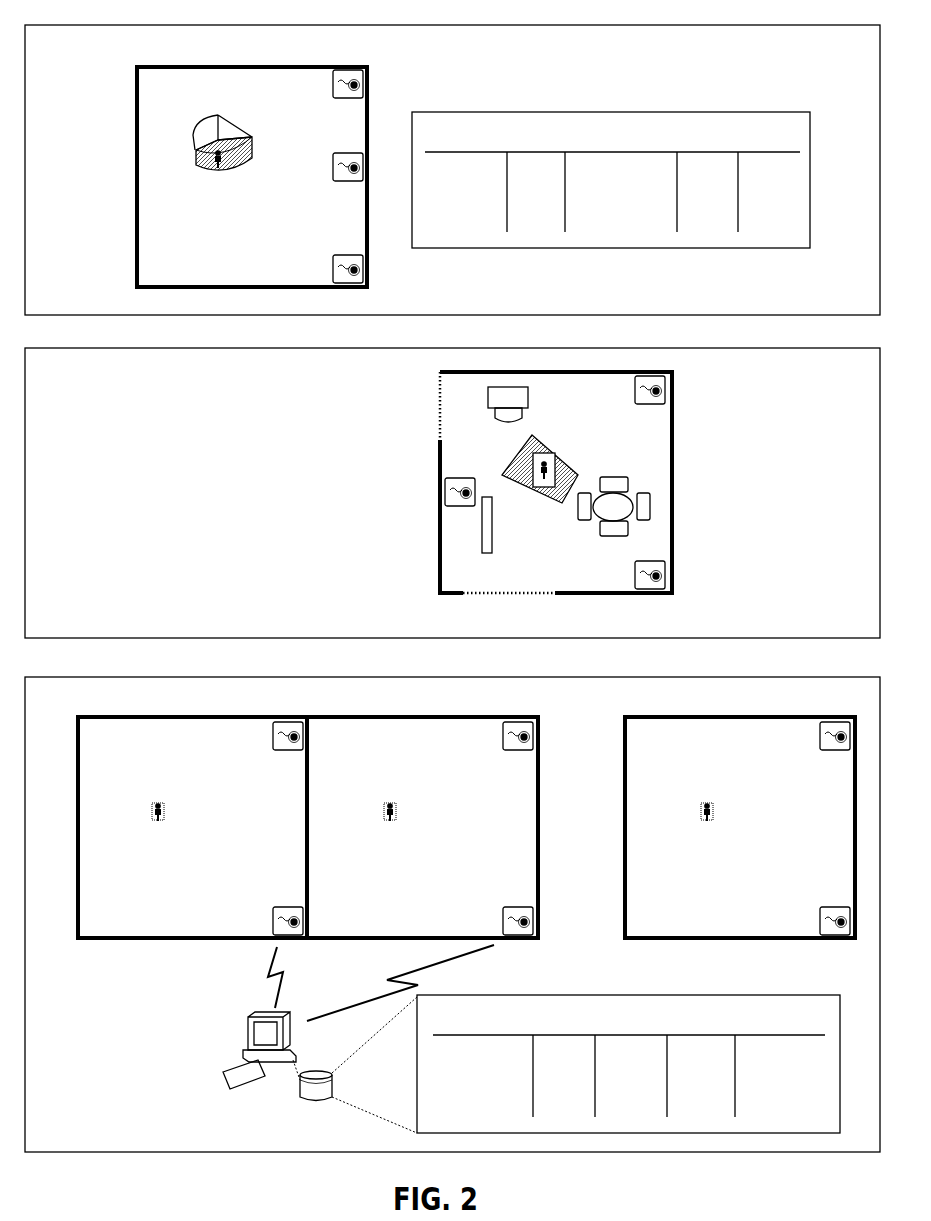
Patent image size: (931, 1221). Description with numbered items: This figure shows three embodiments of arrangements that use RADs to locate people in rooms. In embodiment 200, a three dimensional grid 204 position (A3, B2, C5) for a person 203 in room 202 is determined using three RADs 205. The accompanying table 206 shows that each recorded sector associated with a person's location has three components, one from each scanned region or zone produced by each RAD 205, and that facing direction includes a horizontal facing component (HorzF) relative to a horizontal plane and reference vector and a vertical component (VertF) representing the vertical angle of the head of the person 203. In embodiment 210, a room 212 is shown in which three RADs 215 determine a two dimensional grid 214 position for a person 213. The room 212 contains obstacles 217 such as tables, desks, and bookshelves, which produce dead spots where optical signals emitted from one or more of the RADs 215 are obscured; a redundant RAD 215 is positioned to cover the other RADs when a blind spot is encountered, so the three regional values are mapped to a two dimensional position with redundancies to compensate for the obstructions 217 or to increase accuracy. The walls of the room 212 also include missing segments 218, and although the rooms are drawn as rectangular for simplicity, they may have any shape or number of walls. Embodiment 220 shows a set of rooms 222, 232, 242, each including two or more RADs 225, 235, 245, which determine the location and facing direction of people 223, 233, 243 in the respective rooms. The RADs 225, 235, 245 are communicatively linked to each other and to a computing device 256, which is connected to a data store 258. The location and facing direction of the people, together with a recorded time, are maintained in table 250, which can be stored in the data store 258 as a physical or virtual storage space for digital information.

The embodiment 200 is at (785, 71).
The room 202 is at (235, 91).
The person 203 is at (200, 152).
The three dimensional grid 204 is at (205, 172).
The RADs 205 is at (333, 85).
The table 206 is at (611, 166).
The embodiment 210 is at (342, 400).
The room 212 is at (655, 532).
The person 213 is at (556, 460).
The two dimensional grid 214 is at (573, 468).
The RADs 215 is at (636, 393).
The obstacles 217 is at (528, 405).
The missing segments 218 is at (440, 412).
The embodiment 220 is at (240, 700).
The room 222 is at (176, 745).
The person 223 is at (150, 808).
The RADs 225 is at (273, 738).
The room 232 is at (406, 745).
The person 233 is at (382, 808).
The RADs 235 is at (503, 738).
The room 242 is at (721, 745).
The person 243 is at (699, 808).
The RADs 245 is at (820, 738).
The table 250 is at (595, 995).
The computing device 256 is at (243, 1050).
The data store 258 is at (305, 1100).